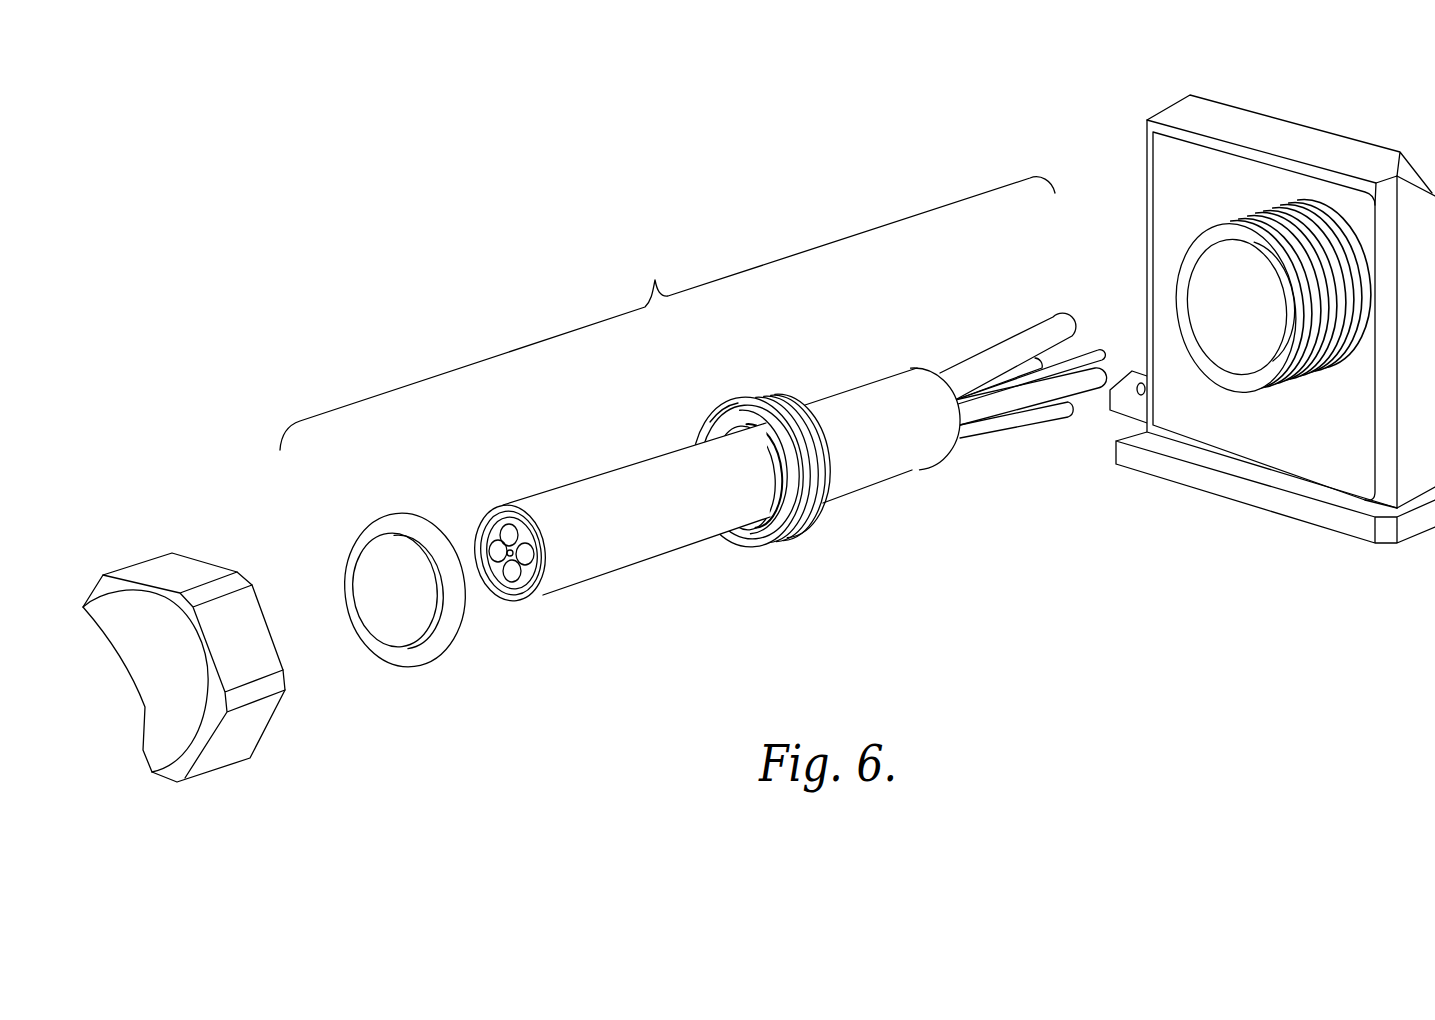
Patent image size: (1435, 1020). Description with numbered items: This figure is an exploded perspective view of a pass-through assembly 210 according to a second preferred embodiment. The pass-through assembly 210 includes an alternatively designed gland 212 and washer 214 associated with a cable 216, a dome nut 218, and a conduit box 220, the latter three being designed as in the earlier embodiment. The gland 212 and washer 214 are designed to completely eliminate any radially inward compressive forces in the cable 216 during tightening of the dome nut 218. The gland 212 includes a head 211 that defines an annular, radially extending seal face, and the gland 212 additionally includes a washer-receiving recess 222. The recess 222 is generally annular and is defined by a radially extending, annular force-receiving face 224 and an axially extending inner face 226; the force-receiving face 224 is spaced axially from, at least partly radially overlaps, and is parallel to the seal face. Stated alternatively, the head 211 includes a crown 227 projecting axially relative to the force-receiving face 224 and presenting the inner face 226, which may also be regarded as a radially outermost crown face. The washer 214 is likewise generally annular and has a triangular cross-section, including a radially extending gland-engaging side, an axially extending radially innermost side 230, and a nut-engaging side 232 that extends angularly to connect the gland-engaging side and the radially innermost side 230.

The pass-through assembly 210 is at (892, 357).
The head 211 is at (793, 538).
The gland 212 is at (721, 458).
The washer 214 is at (366, 590).
The cable 216 is at (608, 584).
The dome nut 218 is at (158, 549).
The conduit box 220 is at (1293, 146).
The washer-receiving recess 222 is at (770, 538).
The force-receiving face 224 is at (726, 412).
The inner face 226 is at (786, 504).
The crown 227 is at (753, 531).
The radially innermost side 230 is at (352, 576).
The nut-engaging side 232 is at (430, 656).